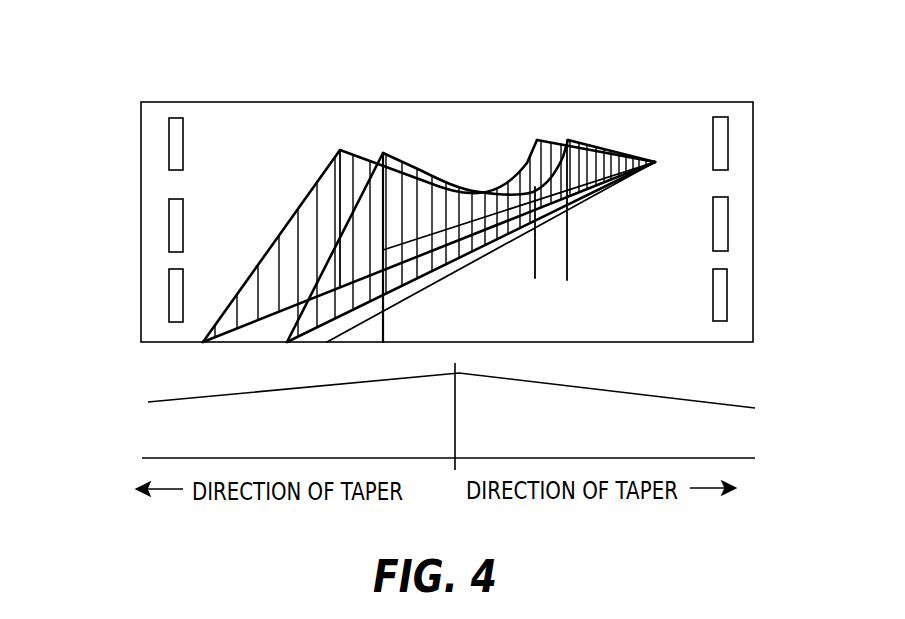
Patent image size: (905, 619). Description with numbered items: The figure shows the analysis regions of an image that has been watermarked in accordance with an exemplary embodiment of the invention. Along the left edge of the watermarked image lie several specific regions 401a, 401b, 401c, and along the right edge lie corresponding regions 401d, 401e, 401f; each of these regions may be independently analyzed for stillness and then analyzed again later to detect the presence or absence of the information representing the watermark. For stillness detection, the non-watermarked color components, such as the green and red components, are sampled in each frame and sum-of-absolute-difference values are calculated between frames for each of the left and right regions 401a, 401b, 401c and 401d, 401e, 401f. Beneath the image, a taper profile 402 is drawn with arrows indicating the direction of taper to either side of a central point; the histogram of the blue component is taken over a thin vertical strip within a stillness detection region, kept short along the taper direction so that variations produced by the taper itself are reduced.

The analysis region 401a is at (177, 127).
The analysis region 401b is at (173, 222).
The analysis region 401c is at (173, 303).
The analysis region 401d is at (723, 127).
The analysis region 401e is at (723, 212).
The analysis region 401f is at (722, 303).
The taper profile 402 is at (715, 388).